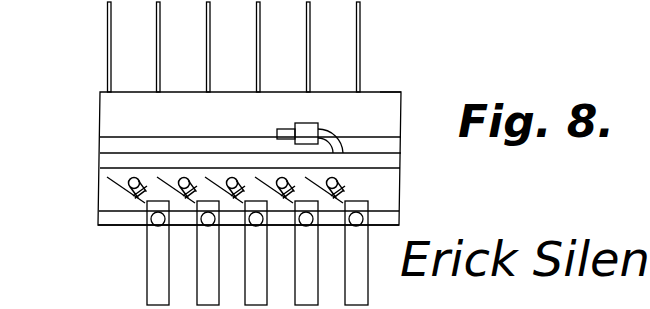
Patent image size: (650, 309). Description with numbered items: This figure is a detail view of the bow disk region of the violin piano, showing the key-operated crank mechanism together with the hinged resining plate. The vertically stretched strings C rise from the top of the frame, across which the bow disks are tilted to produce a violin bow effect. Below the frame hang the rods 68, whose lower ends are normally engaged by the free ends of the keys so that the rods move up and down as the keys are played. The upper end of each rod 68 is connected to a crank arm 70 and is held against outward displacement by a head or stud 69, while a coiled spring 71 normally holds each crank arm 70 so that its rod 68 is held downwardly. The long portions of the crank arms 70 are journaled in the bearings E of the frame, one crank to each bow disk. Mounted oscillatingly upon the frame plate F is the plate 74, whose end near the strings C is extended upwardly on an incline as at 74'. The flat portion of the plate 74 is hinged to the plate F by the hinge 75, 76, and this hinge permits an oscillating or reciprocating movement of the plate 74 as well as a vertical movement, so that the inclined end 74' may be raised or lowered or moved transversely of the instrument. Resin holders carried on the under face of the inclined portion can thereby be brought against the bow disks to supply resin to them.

The rod 68 is at (155, 250).
The head or stud 69 is at (156, 220).
The crank arm 70 is at (137, 198).
The coiled spring 71 is at (112, 180).
The plate 74 is at (279, 154).
The inclined end 74' is at (420, 72).
The hinge 75 is at (339, 129).
The hinge 76 is at (296, 125).
The strings C is at (312, 62).
The plate F is at (130, 153).
The bearing E is at (402, 192).